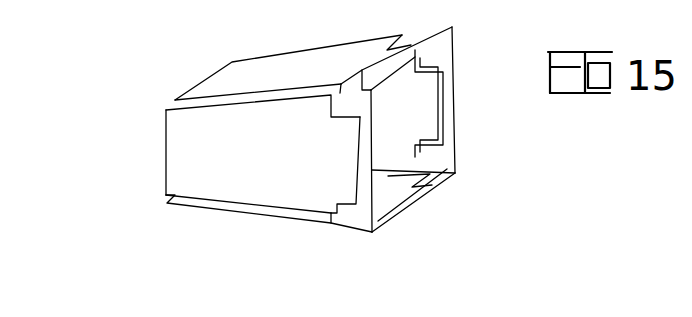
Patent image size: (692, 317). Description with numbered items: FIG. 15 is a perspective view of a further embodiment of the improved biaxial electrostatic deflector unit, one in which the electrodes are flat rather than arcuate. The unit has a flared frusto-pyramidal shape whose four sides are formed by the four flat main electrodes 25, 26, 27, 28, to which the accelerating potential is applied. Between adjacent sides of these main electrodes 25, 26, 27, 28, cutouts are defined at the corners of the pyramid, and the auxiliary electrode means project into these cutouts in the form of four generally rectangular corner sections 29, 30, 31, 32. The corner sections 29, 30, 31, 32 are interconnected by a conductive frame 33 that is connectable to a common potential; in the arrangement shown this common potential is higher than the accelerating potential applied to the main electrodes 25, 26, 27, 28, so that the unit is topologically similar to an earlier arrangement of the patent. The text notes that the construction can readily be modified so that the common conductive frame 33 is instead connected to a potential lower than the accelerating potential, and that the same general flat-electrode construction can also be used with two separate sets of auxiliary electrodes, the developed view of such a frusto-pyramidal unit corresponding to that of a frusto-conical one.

The main electrode 25 is at (255, 72).
The main electrode 26 is at (441, 100).
The main electrode 27 is at (252, 212).
The main electrode 28 is at (172, 152).
The corner section 29 is at (446, 153).
The corner section 30 is at (364, 226).
The corner section 31 is at (359, 82).
The corner section 32 is at (434, 39).
The conductive frame 33 is at (477, 100).